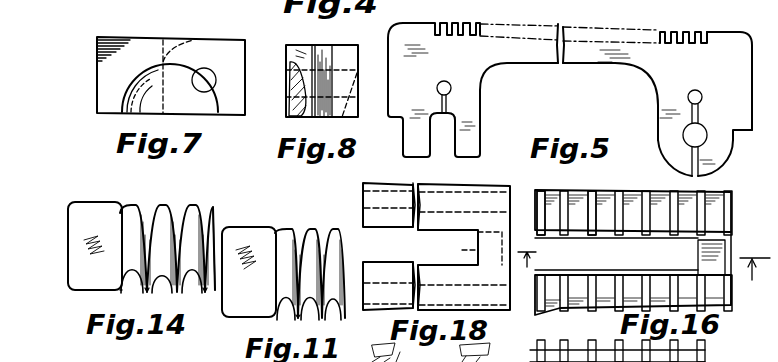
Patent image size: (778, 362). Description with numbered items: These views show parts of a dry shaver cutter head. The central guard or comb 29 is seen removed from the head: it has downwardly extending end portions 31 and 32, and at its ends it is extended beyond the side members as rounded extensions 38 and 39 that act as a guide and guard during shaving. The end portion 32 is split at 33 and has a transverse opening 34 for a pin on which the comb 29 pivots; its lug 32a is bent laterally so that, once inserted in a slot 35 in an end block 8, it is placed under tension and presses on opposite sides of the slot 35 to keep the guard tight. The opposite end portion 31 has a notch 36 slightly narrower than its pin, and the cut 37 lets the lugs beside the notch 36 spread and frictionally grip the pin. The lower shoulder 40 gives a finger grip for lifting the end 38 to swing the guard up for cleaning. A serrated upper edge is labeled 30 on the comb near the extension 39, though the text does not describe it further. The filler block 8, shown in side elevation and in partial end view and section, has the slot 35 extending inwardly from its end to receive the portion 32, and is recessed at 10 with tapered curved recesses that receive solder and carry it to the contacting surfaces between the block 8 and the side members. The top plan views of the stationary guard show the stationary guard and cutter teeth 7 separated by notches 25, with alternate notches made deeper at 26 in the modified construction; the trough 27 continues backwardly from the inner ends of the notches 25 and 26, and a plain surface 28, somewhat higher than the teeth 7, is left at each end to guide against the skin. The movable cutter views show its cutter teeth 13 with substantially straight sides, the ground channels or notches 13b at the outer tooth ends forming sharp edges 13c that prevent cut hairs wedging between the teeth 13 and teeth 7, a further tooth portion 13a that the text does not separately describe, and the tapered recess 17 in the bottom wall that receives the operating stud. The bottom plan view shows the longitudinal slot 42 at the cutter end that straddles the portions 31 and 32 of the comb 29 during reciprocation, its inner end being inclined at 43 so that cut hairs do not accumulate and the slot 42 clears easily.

In FIG. 14, the stationary guard and cutter teeth 7 is at (136, 294).
In FIG. 11, the stationary guard and cutter teeth 7 is at (316, 312).
In FIG. 7, the block 8 is at (125, 45).
In FIG. 8, the block 8 is at (303, 53).
In FIG. 7, the recess 10 is at (197, 108).
In FIG. 8, the recess 10 is at (293, 110).
In FIG. 16, the cutter teeth 13 is at (645, 234).
In FIG. 18, the tooth portion 13a is at (510, 343).
In FIG. 18, the channel or notch 13b is at (504, 350).
In FIG. 16, the channel or notch 13b is at (592, 200).
In FIG. 16, the sharp edge 13c is at (548, 200).
In FIG. 18, the tapered recess 17 is at (528, 266).
In FIG. 16, the tapered recess 17 is at (755, 276).
In FIG. 14, the notch 25 is at (152, 290).
In FIG. 11, the notch 25 is at (344, 310).
In FIG. 14, the deeper notch 26 is at (122, 291).
In FIG. 14, the trough 27 is at (172, 207).
In FIG. 11, the trough 27 is at (315, 246).
In FIG. 14, the plain surface 28 is at (82, 239).
In FIG. 11, the plain surface 28 is at (232, 256).
In FIG. 5, the central guard or comb 29 is at (585, 63).
In FIG. 5, the serrations 30 is at (466, 26).
In FIG. 5, the end portion 31 is at (405, 154).
In FIG. 5, the end portion 32 is at (730, 152).
In FIG. 5, the lug 32a is at (706, 166).
In FIG. 5, the split 33 is at (699, 112).
In FIG. 5, the transverse opening 34 is at (706, 136).
In FIG. 7, the slot 35 is at (195, 45).
In FIG. 8, the slot 35 is at (322, 51).
In FIG. 5, the notch 36 is at (443, 152).
In FIG. 5, the cut 37 is at (447, 107).
In FIG. 5, the extension 38 is at (393, 72).
In FIG. 5, the extension 39 is at (745, 50).
In FIG. 5, the lower shoulder 40 is at (400, 124).
In FIG. 18, the longitudinal slot 42 is at (440, 260).
In FIG. 18, the inclined inner end 43 is at (472, 248).
In FIG. 16, the inclined inner end 43 is at (704, 257).